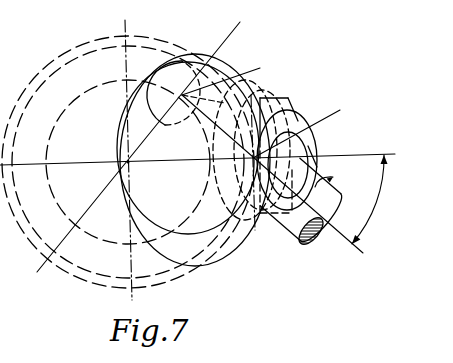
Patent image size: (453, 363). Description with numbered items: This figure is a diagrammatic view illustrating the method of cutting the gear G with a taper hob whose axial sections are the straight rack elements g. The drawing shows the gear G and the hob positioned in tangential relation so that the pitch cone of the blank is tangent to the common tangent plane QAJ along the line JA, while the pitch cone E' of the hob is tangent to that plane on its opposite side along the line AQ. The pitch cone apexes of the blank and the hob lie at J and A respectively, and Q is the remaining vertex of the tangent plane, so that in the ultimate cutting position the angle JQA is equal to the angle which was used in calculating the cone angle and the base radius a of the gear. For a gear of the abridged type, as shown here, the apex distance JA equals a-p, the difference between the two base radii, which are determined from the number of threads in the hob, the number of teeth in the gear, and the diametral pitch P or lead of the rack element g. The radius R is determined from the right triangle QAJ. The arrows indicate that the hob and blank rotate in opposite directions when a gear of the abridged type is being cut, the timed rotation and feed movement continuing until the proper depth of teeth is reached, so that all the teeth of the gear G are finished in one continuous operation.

The radius R is at (67, 55).
The base radius a is at (128, 162).
The apex distance a-p is at (128, 162).
The pitch cone apex of the blank J is at (135, 171).
The diametral pitch P is at (165, 106).
The gear G is at (210, 265).
The pitch cone apex of the hob A is at (227, 77).
The vertex of the tangent plane Q is at (303, 131).
The pitch cone of the hob E' is at (300, 173).
The rack element g is at (279, 182).